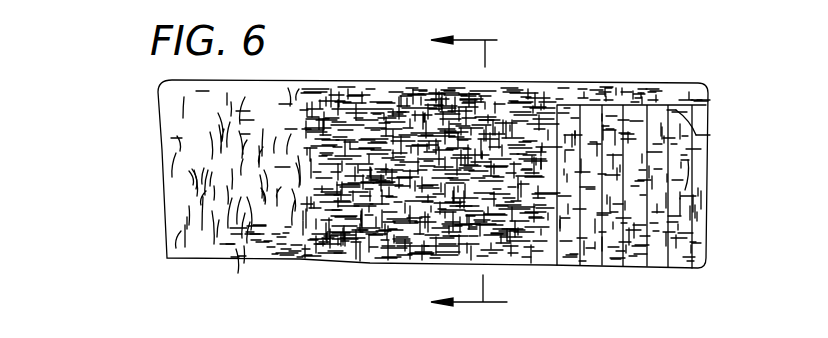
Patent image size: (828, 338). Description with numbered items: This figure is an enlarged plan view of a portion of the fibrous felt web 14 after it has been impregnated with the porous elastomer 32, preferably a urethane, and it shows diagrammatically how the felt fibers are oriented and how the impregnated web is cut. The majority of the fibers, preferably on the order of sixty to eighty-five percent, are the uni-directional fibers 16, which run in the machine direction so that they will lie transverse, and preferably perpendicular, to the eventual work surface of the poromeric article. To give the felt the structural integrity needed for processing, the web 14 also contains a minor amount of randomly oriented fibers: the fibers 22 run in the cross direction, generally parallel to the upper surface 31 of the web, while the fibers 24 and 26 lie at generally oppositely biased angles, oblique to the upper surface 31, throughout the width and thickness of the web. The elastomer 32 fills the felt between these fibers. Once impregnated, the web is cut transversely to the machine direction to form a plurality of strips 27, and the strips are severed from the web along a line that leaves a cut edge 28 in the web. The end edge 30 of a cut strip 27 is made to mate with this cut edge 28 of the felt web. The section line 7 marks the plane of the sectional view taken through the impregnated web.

The fibrous felt web 14 is at (267, 259).
The uni-directional fibers 16 is at (400, 100).
The randomly oriented fibers 22 is at (318, 100).
The bias fibers 24 is at (213, 196).
The bias fibers 26 is at (263, 153).
The strips 27 is at (655, 263).
The cut edge 28 is at (662, 103).
The end edge 30 is at (676, 110).
The upper surface 31 is at (685, 190).
The porous elastomer 32 is at (178, 219).
The section line 7- 7 is at (479, 174).